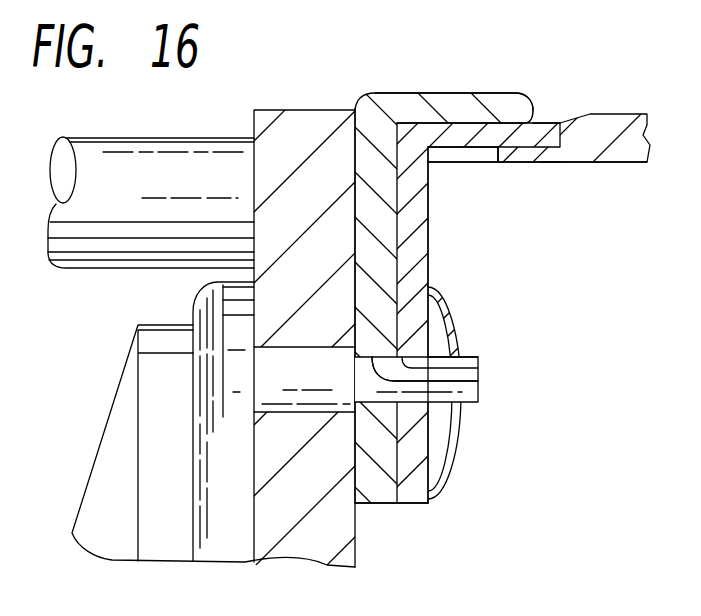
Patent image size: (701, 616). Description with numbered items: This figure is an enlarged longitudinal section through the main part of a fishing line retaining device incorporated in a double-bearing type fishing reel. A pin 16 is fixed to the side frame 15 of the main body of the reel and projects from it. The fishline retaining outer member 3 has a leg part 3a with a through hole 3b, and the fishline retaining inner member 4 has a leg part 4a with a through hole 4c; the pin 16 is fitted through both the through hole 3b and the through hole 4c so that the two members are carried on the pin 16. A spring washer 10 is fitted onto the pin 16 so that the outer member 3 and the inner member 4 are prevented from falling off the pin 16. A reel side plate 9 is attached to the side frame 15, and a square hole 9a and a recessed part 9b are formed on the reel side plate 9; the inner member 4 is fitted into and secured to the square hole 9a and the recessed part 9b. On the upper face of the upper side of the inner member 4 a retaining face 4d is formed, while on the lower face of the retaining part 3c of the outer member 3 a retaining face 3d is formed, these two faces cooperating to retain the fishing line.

The fishline retaining outer member 3 is at (392, 82).
The leg part of outer member 3a is at (370, 504).
The through hole of outer member leg part 3b is at (478, 375).
The retaining part of outer member 3c is at (495, 92).
The retaining face of outer member 3d is at (457, 123).
The fishline retaining inner member 4 is at (550, 110).
The leg part of inner member 4a is at (428, 265).
The through hole of inner member leg part 4c is at (478, 360).
The retaining face of inner member 4d is at (434, 122).
The reel side plate 9 is at (622, 101).
The square hole 9a is at (490, 163).
The recessed part 9b is at (550, 163).
The spring washer 10 is at (457, 436).
The side frame 15 is at (303, 118).
The pin 16 is at (478, 392).